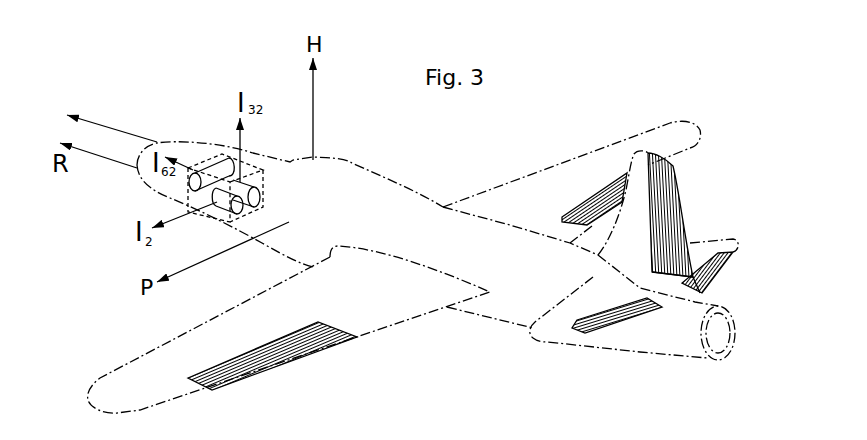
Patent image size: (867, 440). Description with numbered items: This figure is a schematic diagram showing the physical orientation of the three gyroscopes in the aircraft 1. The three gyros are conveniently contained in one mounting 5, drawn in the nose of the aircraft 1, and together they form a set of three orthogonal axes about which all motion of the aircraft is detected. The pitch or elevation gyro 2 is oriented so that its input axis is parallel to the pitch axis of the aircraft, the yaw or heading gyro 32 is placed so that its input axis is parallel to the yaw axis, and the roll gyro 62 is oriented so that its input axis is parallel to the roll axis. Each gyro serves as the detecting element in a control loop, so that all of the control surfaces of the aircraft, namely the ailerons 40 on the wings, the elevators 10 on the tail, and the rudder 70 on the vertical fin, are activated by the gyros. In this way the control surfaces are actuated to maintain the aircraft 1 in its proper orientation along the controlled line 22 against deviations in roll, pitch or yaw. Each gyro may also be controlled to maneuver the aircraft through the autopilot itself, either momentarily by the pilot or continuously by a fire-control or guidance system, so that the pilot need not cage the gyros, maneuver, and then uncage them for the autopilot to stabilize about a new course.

The aircraft 1 is at (472, 313).
The pitch or elevation gyro 2 is at (242, 212).
The mounting 5 is at (266, 178).
The elevators 10 is at (715, 268).
The controlled line 22 is at (107, 116).
The yaw or heading gyro 32 is at (262, 198).
The ailerons 40 is at (268, 360).
The roll gyro 62 is at (210, 165).
The rudder 70 is at (673, 207).